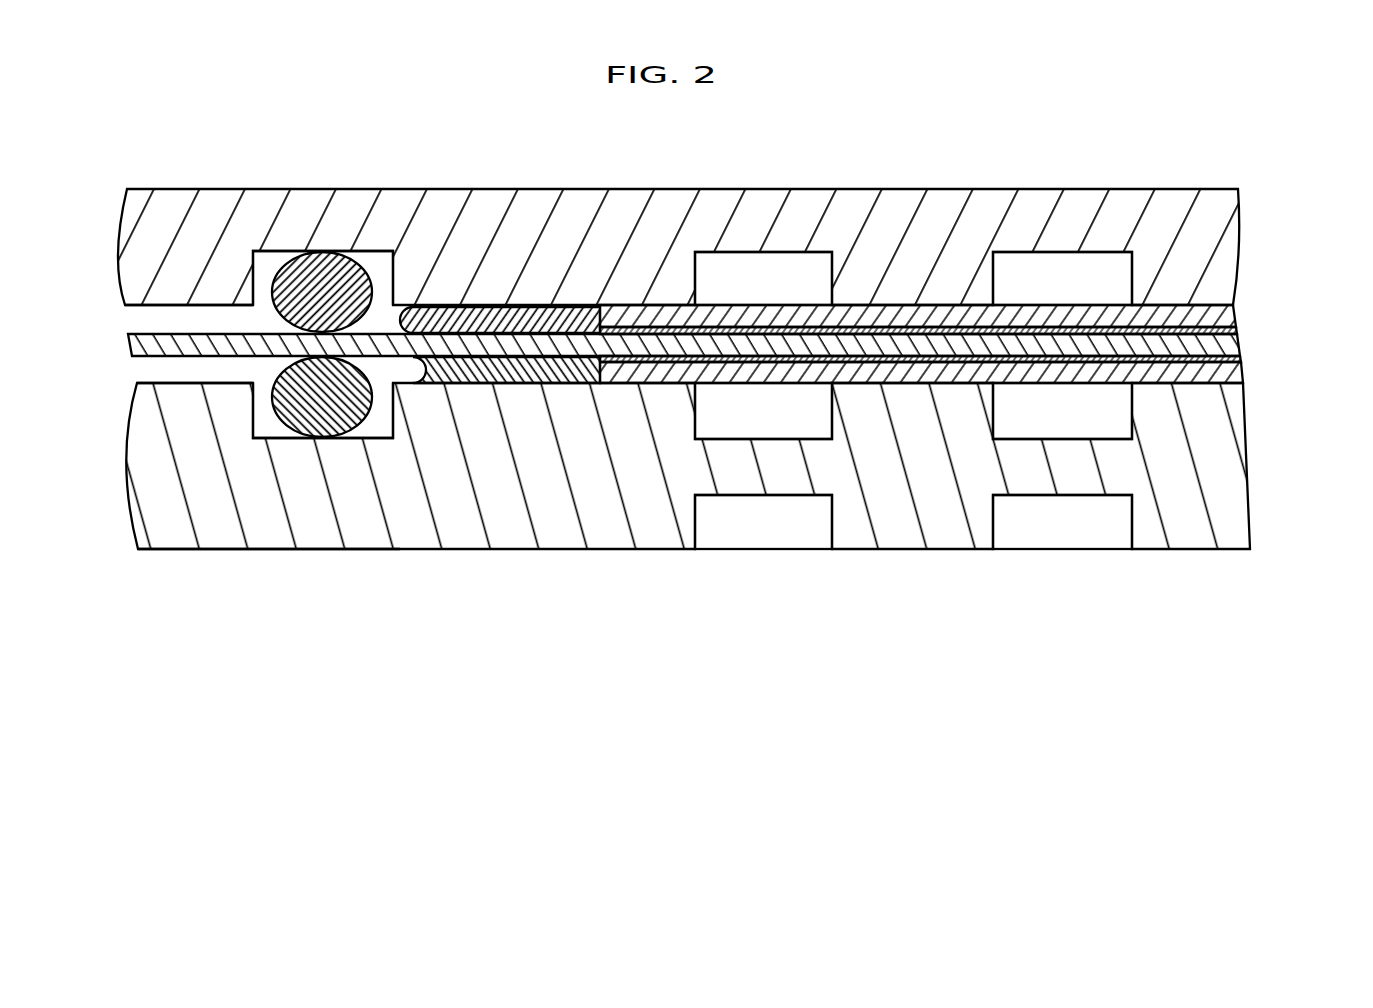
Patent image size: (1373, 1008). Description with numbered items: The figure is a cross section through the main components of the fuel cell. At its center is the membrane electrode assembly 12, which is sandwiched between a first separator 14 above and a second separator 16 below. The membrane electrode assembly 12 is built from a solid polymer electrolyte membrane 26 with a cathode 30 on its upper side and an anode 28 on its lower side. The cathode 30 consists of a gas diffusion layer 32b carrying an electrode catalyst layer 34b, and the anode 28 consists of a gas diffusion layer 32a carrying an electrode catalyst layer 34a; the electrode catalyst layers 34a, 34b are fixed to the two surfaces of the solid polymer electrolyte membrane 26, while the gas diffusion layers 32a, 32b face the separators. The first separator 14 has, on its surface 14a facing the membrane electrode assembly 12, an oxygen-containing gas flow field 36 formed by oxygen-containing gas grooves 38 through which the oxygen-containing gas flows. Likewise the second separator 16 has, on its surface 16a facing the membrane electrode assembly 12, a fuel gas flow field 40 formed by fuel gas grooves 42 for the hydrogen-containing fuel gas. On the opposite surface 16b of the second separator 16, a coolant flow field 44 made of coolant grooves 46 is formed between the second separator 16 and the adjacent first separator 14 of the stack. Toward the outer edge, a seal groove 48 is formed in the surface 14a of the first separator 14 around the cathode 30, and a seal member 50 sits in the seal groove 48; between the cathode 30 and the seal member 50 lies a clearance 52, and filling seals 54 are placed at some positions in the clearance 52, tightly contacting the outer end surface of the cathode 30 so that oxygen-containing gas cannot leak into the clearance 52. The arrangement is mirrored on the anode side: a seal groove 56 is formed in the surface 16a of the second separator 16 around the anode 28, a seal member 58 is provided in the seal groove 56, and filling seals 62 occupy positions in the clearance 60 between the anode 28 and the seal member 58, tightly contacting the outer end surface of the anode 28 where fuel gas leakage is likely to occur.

The membrane electrode assembly 12 is at (743, 283).
The first separator 14 is at (1165, 187).
The surface of the first separator 14a is at (135, 318).
The second separator 16 is at (1210, 556).
The surface of the second separator 16a is at (133, 368).
The surface of the second separator 16b is at (270, 550).
The solid polymer electrolyte membrane 26 is at (1220, 347).
The anode 28 is at (979, 392).
The cathode 30 is at (979, 301).
The gas diffusion layer 32a is at (1312, 365).
The gas diffusion layer 32b is at (1232, 312).
The electrode catalyst layer 34a is at (1228, 366).
The electrode catalyst layer 34b is at (952, 318).
The oxygen-containing gas flow field 36 is at (913, 219).
The oxygen-containing gas grooves 38 is at (745, 239).
The fuel gas flow field 40 is at (913, 496).
The fuel gas grooves 42 is at (827, 418).
The coolant flow field 44 is at (913, 550).
The coolant grooves 46 is at (913, 521).
The seal groove 48 is at (375, 257).
The seal member 50 is at (297, 270).
The clearance 52 is at (501, 297).
The filling seals 54 is at (490, 308).
The seal groove 56 is at (278, 431).
The seal member 58 is at (308, 408).
The clearance 60 is at (506, 393).
The filling seals 62 is at (490, 367).